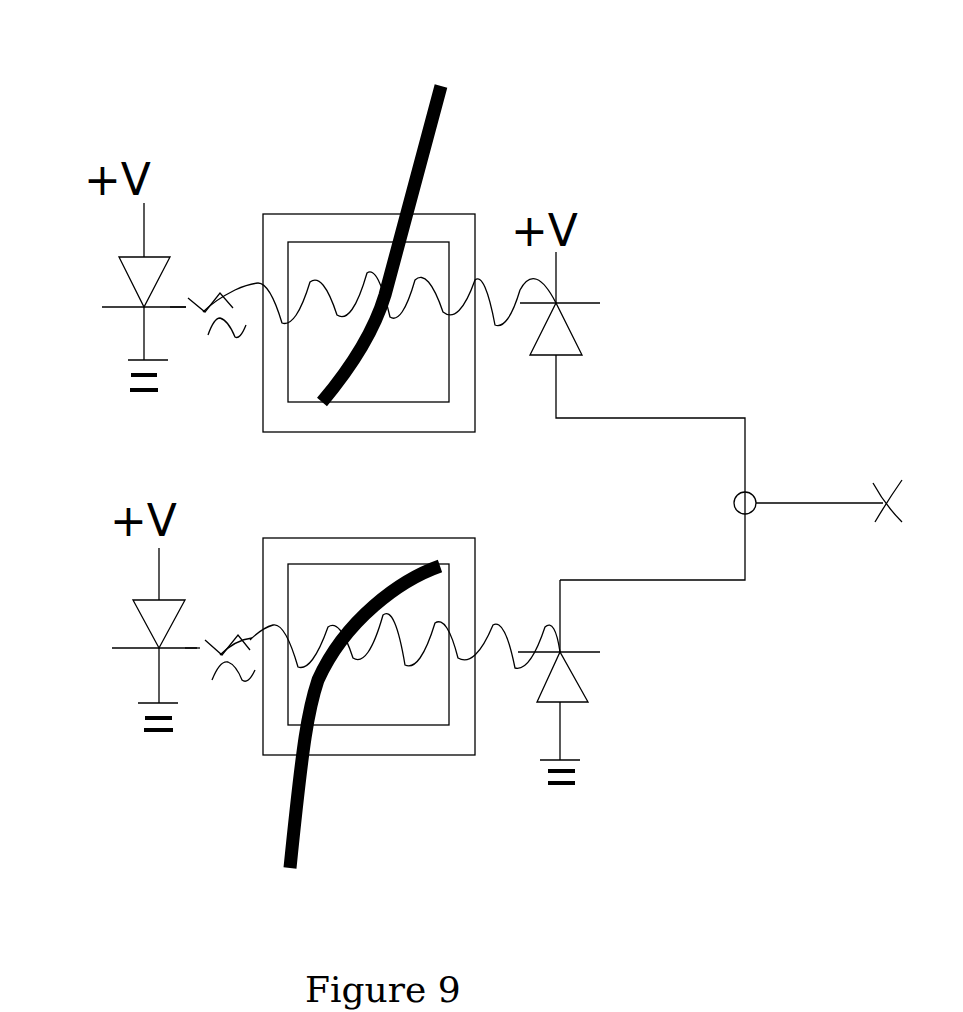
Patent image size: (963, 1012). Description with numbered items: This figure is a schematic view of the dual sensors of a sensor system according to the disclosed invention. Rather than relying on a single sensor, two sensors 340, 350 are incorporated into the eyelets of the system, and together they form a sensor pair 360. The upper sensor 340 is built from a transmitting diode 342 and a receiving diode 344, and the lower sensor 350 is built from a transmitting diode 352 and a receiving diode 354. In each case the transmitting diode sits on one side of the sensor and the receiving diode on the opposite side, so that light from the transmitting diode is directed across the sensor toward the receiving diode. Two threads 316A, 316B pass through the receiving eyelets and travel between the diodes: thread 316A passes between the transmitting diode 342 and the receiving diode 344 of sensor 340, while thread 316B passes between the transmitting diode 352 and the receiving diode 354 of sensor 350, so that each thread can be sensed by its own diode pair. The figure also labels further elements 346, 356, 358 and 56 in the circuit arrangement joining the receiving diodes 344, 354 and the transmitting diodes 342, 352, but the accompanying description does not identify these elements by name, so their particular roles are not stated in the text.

The sensor pair 360 is at (158, 100).
The thread 316A is at (428, 126).
The thread 316B is at (285, 798).
The sensor 340 is at (455, 225).
The sensor 350 is at (418, 755).
The transmitting diode 342 is at (130, 283).
The transmitting diode 352 is at (150, 635).
The receiving diode 344 is at (568, 337).
The receiving diode 354 is at (578, 688).
The signal line 346 is at (246, 280).
The second signal line 356 is at (693, 579).
The output terminal 358 is at (888, 503).
The light 56 is at (248, 647).